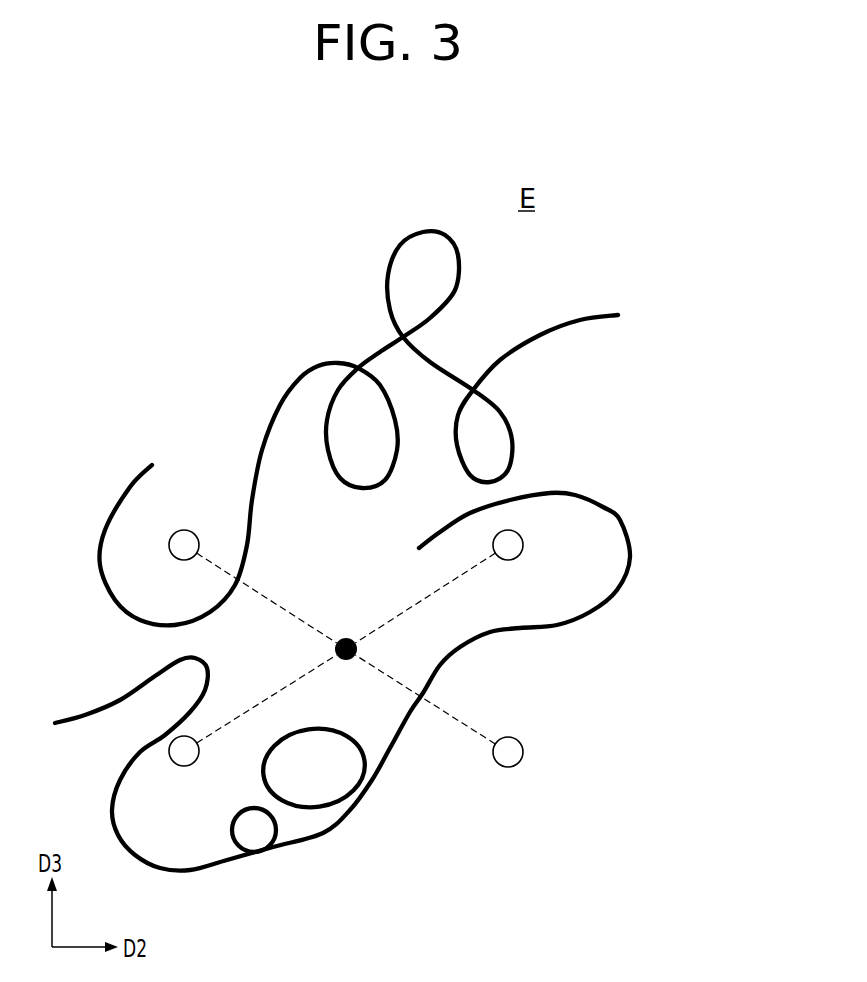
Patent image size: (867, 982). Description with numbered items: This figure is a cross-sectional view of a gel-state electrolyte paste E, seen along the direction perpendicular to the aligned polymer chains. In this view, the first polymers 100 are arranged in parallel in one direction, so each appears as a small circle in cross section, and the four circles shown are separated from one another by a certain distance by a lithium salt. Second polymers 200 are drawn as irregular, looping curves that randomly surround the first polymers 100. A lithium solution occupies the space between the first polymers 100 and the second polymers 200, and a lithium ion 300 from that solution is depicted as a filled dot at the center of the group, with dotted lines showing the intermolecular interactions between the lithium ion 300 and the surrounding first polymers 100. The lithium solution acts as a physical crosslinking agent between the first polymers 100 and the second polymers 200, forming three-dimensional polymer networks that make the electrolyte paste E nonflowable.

The first polymers 100 is at (523, 753).
The second polymers 200 is at (632, 549).
The lithium ions 300 is at (346, 638).